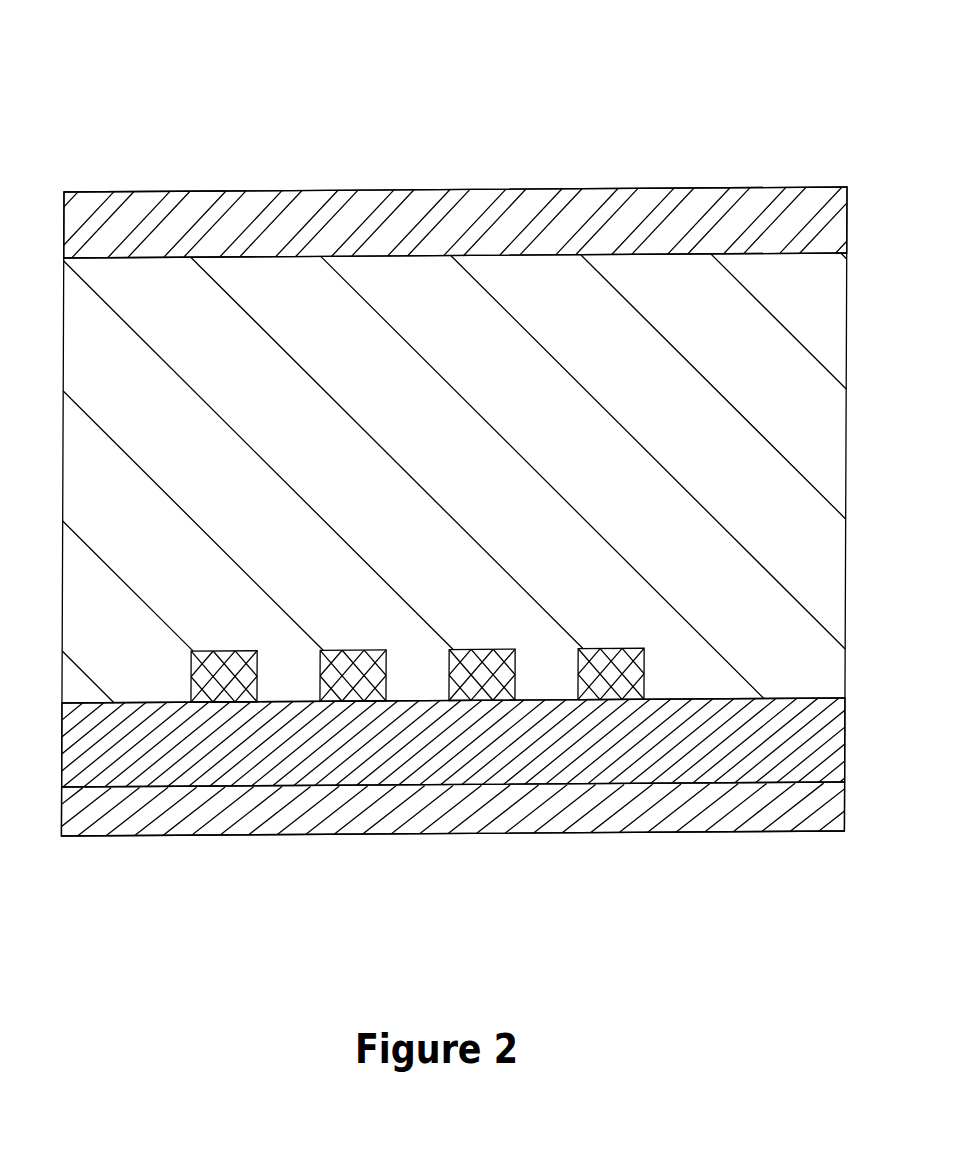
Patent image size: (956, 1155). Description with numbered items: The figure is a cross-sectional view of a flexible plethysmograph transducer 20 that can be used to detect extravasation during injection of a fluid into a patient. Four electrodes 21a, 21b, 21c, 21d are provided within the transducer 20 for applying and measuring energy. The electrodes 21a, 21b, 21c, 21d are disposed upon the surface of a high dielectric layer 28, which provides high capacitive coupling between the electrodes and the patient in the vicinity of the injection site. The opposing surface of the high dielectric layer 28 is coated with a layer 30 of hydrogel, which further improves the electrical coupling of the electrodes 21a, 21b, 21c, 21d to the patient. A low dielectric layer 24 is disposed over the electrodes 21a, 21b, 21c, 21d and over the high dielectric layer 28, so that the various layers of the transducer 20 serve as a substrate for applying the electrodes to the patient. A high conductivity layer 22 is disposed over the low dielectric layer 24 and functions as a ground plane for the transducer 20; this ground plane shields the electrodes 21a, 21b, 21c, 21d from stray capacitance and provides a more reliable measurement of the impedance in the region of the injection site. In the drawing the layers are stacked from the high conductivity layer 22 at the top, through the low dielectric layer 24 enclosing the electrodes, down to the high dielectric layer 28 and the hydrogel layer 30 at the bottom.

The flexible plethysmograph transducer 20 is at (286, 136).
The high conductivity layer 22 is at (693, 222).
The low dielectric layer 24 is at (425, 293).
The electrode 21a is at (233, 652).
The electrode 21b is at (363, 652).
The electrode 21c is at (487, 652).
The electrode 21d is at (610, 652).
The high dielectric layer 28 is at (487, 763).
The layer of hydrogel 30 is at (142, 818).